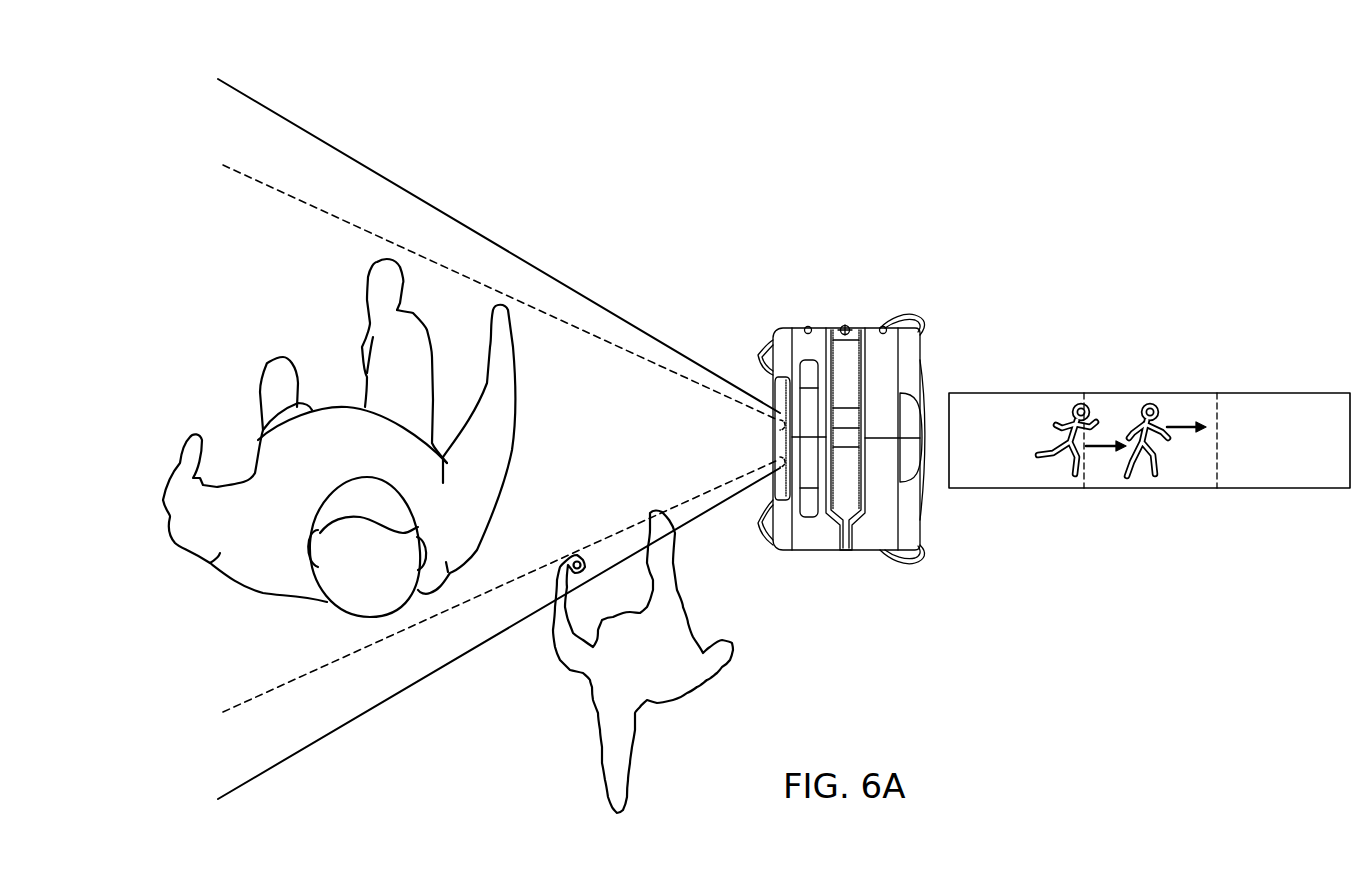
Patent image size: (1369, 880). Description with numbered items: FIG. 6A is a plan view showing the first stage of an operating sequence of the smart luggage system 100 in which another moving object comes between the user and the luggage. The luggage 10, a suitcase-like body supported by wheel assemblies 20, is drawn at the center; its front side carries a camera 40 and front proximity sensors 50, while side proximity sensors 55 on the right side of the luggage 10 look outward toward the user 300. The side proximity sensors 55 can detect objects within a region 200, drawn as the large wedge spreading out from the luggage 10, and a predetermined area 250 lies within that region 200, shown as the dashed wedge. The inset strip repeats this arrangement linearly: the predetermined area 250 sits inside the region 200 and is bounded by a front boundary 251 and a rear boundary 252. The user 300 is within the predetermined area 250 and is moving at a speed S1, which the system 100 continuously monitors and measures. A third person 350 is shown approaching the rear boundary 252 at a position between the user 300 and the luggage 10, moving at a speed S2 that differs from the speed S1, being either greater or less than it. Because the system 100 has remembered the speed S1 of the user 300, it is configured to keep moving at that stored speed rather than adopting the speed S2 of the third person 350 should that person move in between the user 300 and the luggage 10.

The luggage 10 is at (880, 528).
The wheel assembly 20 is at (899, 562).
The camera 40 is at (845, 325).
The front proximity sensor 50 is at (807, 326).
The side proximity sensor 55 is at (779, 422).
The smart luggage system 100 is at (984, 276).
The region 200 is at (330, 748).
The predetermined area 250 is at (257, 704).
The front boundary 251 is at (1218, 444).
The rear boundary 252 is at (1082, 487).
The user 300 is at (210, 563).
The third person 350 is at (696, 635).
The speed of the user S1 is at (1170, 420).
The speed of the third person S2 is at (1102, 450).